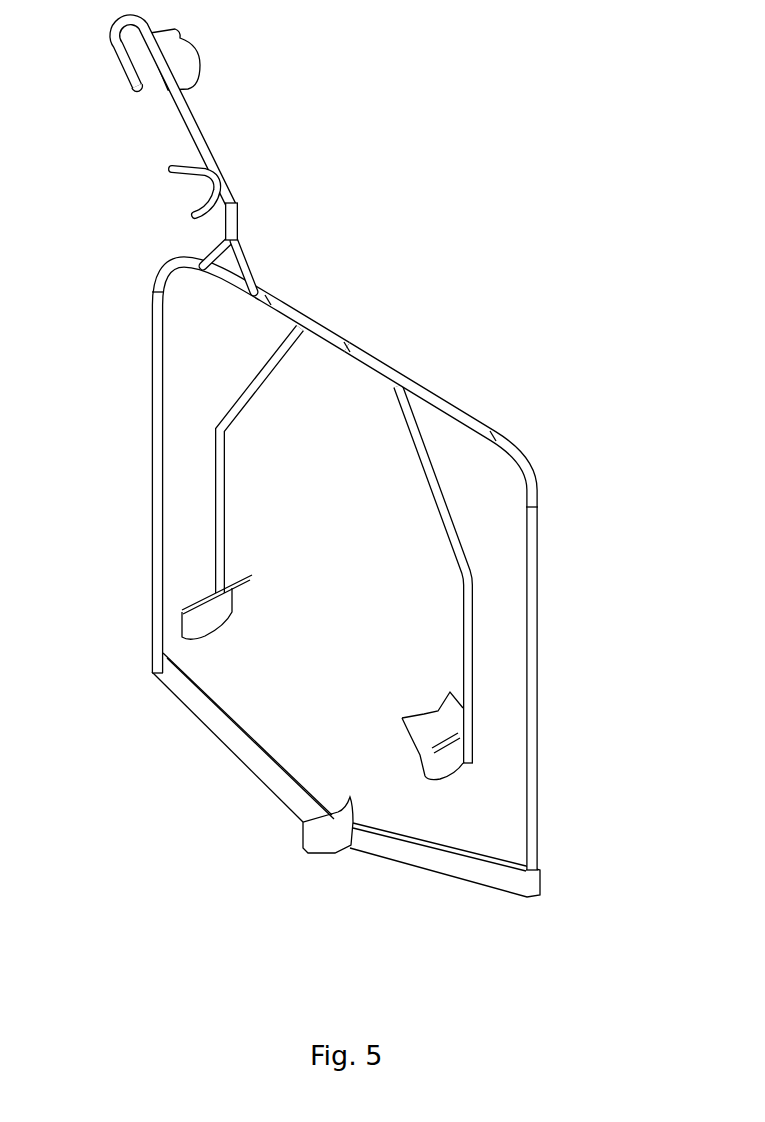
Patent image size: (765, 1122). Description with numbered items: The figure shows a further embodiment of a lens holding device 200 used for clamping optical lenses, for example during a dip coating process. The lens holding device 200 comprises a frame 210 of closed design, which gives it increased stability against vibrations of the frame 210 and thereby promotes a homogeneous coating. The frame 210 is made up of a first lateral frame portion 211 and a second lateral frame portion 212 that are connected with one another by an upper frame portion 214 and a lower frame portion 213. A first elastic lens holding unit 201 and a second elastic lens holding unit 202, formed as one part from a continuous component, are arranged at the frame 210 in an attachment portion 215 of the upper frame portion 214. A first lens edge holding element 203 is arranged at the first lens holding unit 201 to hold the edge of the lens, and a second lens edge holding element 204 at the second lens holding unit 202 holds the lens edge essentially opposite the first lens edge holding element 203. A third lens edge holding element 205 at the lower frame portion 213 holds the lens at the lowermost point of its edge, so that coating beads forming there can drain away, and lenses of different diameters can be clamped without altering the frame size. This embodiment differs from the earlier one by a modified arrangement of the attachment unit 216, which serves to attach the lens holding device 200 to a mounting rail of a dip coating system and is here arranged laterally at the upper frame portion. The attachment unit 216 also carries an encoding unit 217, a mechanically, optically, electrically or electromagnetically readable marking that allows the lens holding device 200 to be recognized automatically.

The lens holding device 200 is at (348, 449).
The frame 210 is at (342, 550).
The first lateral frame portion 211 is at (150, 427).
The second lateral frame portion 212 is at (538, 632).
The lower frame portion 213 is at (230, 737).
The upper frame portion 214 is at (347, 348).
The attachment portion 215 is at (268, 298).
The attachment unit 216 is at (221, 146).
The encoding unit 217 is at (180, 40).
The first elastic lens holding unit 201 is at (243, 407).
The second elastic lens holding unit 202 is at (433, 493).
The first lens edge holding element 203 is at (221, 610).
The second lens edge holding element 204 is at (430, 723).
The third lens edge holding element 205 is at (308, 836).